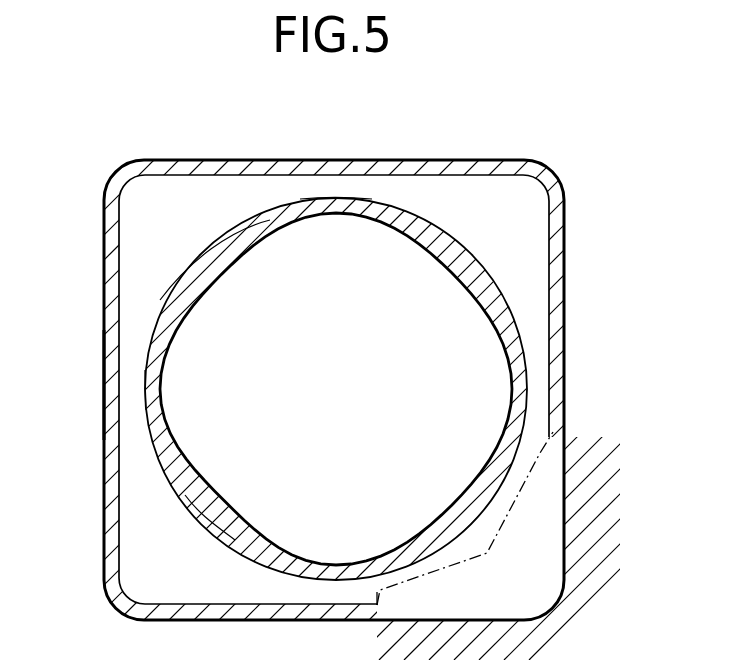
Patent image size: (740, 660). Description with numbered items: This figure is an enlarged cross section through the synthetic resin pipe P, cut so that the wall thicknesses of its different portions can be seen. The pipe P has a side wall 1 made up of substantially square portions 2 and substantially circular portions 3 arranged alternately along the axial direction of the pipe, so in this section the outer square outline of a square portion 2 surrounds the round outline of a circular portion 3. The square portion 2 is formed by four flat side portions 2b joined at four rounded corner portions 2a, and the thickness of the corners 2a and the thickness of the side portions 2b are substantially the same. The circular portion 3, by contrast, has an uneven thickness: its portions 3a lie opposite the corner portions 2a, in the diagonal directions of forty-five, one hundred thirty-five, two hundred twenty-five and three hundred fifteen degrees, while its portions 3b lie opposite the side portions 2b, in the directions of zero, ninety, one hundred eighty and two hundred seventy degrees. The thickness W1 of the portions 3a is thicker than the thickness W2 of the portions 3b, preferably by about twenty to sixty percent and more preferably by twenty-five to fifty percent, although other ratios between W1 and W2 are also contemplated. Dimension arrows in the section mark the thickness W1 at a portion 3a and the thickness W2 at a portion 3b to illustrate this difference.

The synthetic resin pipe P is at (586, 174).
The side wall 1 is at (566, 259).
The substantially square portion 2 is at (566, 560).
The corner portion 2a is at (128, 166).
The side portion 2b is at (186, 386).
The substantially circular portion 3 is at (529, 406).
The portion of circular portion corresponding to corner portion 3a is at (249, 303).
The portion of circular portion corresponding to side portion 3b is at (334, 248).
The thickness of portions 3a W1 is at (244, 476).
The thickness of portions 3b W2 is at (149, 399).